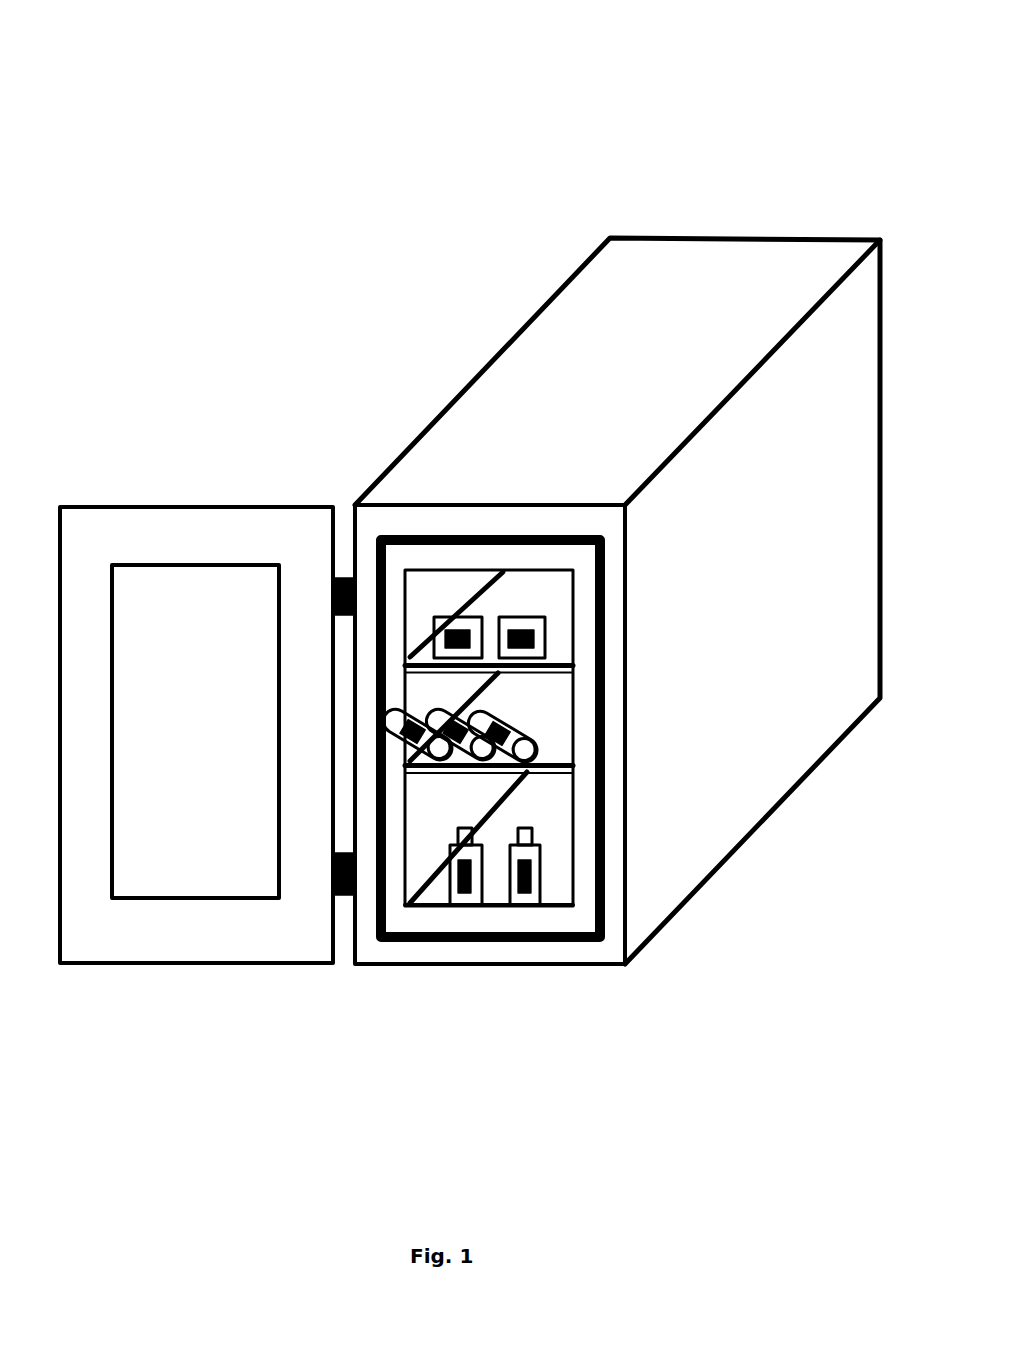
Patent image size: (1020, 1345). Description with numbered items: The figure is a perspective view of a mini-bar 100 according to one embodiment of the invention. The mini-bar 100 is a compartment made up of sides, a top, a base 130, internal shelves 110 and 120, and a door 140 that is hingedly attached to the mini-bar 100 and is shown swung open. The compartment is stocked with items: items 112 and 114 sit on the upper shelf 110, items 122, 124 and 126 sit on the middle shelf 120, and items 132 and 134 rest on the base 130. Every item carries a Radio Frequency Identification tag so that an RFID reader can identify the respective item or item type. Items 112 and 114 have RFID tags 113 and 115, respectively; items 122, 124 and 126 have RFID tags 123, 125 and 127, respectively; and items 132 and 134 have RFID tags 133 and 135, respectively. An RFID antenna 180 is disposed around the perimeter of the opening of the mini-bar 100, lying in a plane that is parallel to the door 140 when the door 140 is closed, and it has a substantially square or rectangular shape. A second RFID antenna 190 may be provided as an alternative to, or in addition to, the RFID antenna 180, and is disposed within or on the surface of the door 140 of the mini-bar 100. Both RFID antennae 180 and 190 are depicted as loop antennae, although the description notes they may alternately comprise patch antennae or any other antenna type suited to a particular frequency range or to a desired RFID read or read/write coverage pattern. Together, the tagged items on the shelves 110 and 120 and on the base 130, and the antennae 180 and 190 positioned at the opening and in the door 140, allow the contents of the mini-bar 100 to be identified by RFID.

The mini-bar 100 is at (658, 150).
The shelf 110 is at (560, 734).
The RFID tag 115 is at (555, 711).
The RFID antenna 180 is at (489, 673).
The item 124 is at (555, 622).
The shelf 120 is at (566, 723).
The base 130 is at (543, 933).
The item 132 is at (425, 962).
The item 112 is at (450, 619).
The RFID tag 113 is at (334, 638).
The item 114 is at (527, 619).
The item 122 is at (327, 733).
The RFID tag 123 is at (361, 753).
The RFID tag 125 is at (432, 766).
The item 126 is at (642, 693).
The RFID tag 127 is at (589, 803).
The RFID tag 133 is at (437, 925).
The item 134 is at (543, 816).
The RFID tag 135 is at (505, 951).
The door 140 is at (207, 706).
The RFID antenna 190 is at (195, 762).